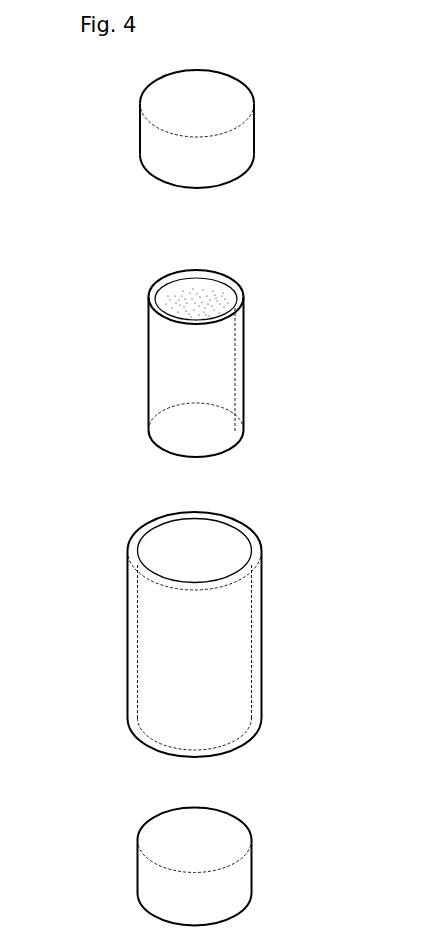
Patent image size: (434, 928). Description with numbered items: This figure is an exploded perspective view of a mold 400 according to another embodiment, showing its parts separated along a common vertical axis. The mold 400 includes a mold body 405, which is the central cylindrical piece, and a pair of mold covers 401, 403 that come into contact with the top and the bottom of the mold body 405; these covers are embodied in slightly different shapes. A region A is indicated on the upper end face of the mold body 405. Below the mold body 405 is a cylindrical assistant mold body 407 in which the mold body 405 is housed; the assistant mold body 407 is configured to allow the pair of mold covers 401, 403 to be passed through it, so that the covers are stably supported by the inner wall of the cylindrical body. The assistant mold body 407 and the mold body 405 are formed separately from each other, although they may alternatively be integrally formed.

The mold 400 is at (108, 72).
The mold cover 401 is at (245, 141).
The mold cover 403 is at (242, 878).
The mold body 405 is at (238, 345).
The assistant mold body 407 is at (258, 635).
The region A is at (217, 296).